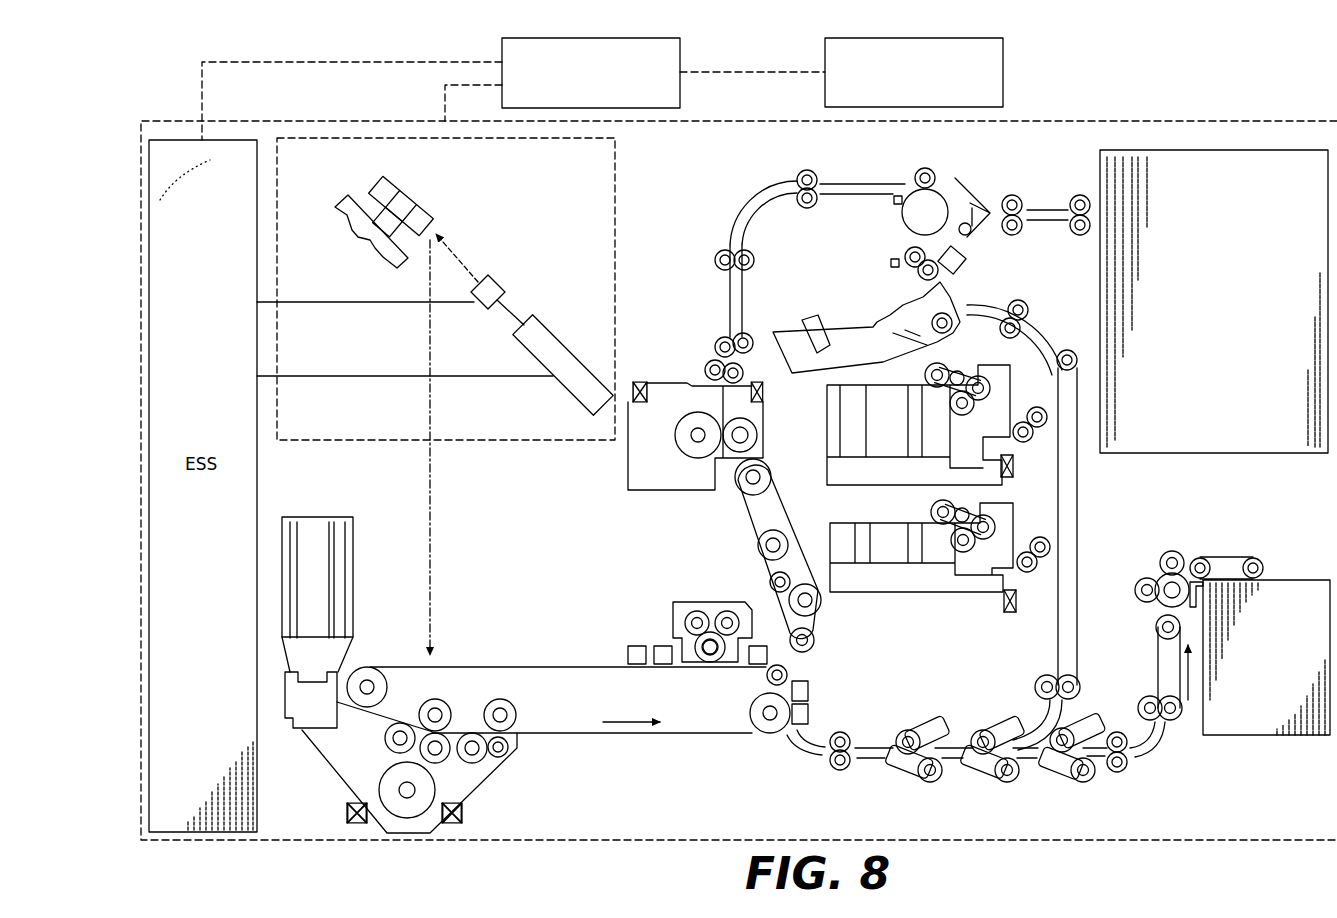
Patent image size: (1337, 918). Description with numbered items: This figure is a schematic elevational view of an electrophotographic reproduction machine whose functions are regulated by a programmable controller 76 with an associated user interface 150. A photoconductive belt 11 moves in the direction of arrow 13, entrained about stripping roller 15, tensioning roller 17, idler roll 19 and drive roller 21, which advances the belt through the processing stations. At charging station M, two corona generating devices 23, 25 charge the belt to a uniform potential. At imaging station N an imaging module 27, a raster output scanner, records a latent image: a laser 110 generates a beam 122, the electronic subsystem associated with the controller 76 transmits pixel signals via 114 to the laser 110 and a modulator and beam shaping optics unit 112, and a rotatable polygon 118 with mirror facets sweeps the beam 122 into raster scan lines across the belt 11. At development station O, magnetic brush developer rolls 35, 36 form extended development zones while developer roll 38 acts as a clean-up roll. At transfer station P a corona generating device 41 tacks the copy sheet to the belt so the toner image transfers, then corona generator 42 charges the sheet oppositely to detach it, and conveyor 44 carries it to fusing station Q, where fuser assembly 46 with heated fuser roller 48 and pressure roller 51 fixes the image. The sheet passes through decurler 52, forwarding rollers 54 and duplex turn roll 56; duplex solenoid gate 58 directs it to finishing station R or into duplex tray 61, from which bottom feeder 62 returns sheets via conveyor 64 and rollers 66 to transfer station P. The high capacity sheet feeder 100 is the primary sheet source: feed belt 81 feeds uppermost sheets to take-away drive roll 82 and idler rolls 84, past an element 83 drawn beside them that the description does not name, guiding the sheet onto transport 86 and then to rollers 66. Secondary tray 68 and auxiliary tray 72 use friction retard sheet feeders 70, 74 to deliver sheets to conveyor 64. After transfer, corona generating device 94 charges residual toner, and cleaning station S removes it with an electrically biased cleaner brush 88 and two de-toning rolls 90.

The controller 76 is at (486, 42).
The user interface 150 is at (1003, 74).
The imaging module 27 is at (504, 440).
The laser 110 is at (556, 389).
The modulator and beam shaping optics unit 112 is at (501, 289).
The signal path 114 is at (456, 268).
The rotatable polygon 118 is at (412, 206).
The beam 122 is at (433, 601).
The photoconductive belt 11 is at (580, 736).
The arrow 13 is at (630, 732).
The tensioning roller 17 is at (368, 667).
The idler roll 19 is at (500, 699).
The magnetic brush developer roll 35 is at (386, 741).
The magnetic brush developer roll 36 is at (437, 763).
The developer roll 38 is at (502, 758).
The development station O is at (490, 786).
The fusing station Q is at (633, 505).
The imaging station N is at (579, 623).
The charging station M is at (640, 621).
The cleaning station S is at (710, 588).
The transfer station P is at (817, 702).
The finishing station R is at (1167, 470).
The corona generating device 25 is at (628, 653).
The corona generating device 23 is at (658, 647).
The corona generating device 94 is at (768, 655).
The de-toning rolls 90 is at (714, 620).
The cleaner brush 88 is at (708, 661).
The stripping roller 15 is at (768, 677).
The drive roller 21 is at (770, 733).
The corona generator 42 is at (810, 690).
The corona generating device 41 is at (810, 719).
The fuser assembly 46 is at (667, 368).
The fuser roller 48 is at (676, 441).
The pressure roller 51 is at (757, 436).
The decurler 52 is at (711, 364).
The forwarding rollers 54 is at (724, 249).
The duplex turn roll 56 is at (904, 226).
The duplex solenoid gate 58 is at (985, 191).
The duplex tray 61 is at (853, 346).
The bottom feeder 62 is at (944, 342).
The secondary tray 68 is at (878, 485).
The sheet feeder 70 is at (963, 372).
The auxiliary tray 72 is at (910, 591).
The sheet feeder 74 is at (966, 504).
The conveyor 44 is at (751, 519).
The conveyor 64 is at (1080, 531).
The rollers 66 is at (904, 739).
The take-away drive roll 82 is at (1158, 584).
The idler rolls 84 is at (1166, 554).
The exit guide 83 is at (1192, 580).
The feed belt 81 is at (1228, 560).
The transport 86 is at (1158, 656).
The high capacity variable sheet size sheet feeder 100 is at (1306, 572).